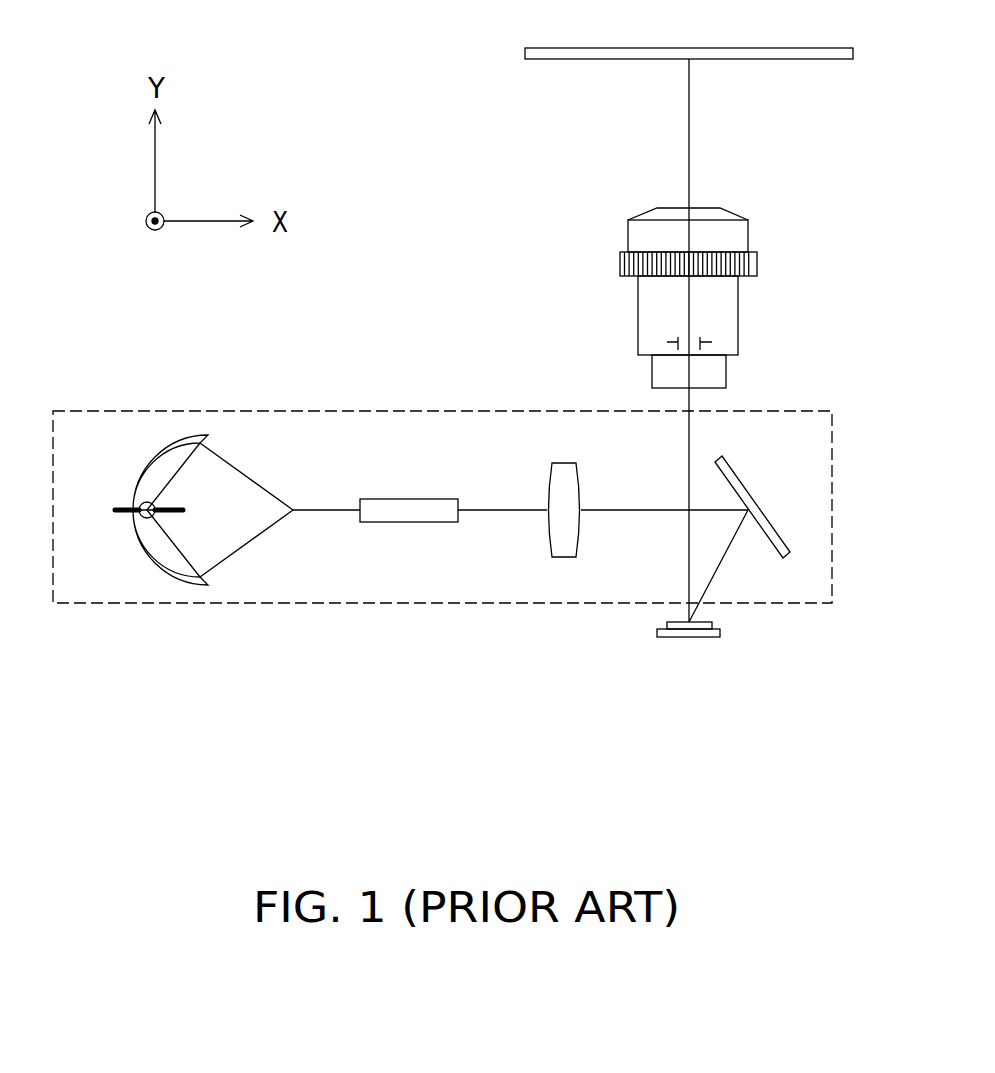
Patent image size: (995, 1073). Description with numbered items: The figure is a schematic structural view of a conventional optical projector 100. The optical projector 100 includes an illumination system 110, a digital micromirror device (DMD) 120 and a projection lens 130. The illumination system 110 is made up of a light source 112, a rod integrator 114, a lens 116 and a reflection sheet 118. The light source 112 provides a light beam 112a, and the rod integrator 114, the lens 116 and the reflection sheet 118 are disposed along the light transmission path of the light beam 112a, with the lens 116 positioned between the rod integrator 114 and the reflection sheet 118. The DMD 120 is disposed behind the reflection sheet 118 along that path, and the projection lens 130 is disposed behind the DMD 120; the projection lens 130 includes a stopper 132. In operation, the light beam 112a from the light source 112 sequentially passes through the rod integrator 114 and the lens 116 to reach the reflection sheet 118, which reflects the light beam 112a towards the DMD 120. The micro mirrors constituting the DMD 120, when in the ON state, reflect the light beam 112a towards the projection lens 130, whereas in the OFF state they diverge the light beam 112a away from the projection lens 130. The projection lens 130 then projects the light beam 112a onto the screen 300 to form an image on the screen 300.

The optical projector 100 is at (495, 745).
The illumination system 110 is at (218, 410).
The light source 112 is at (147, 500).
The light beam 112a is at (315, 513).
The rod integrator 114 is at (400, 508).
The lens 116 is at (565, 472).
The reflection sheet 118 is at (733, 477).
The digital micromirror device (DMD) 120 is at (693, 630).
The projection lens 130 is at (730, 298).
The stopper 132 is at (675, 343).
The screen 300 is at (530, 53).